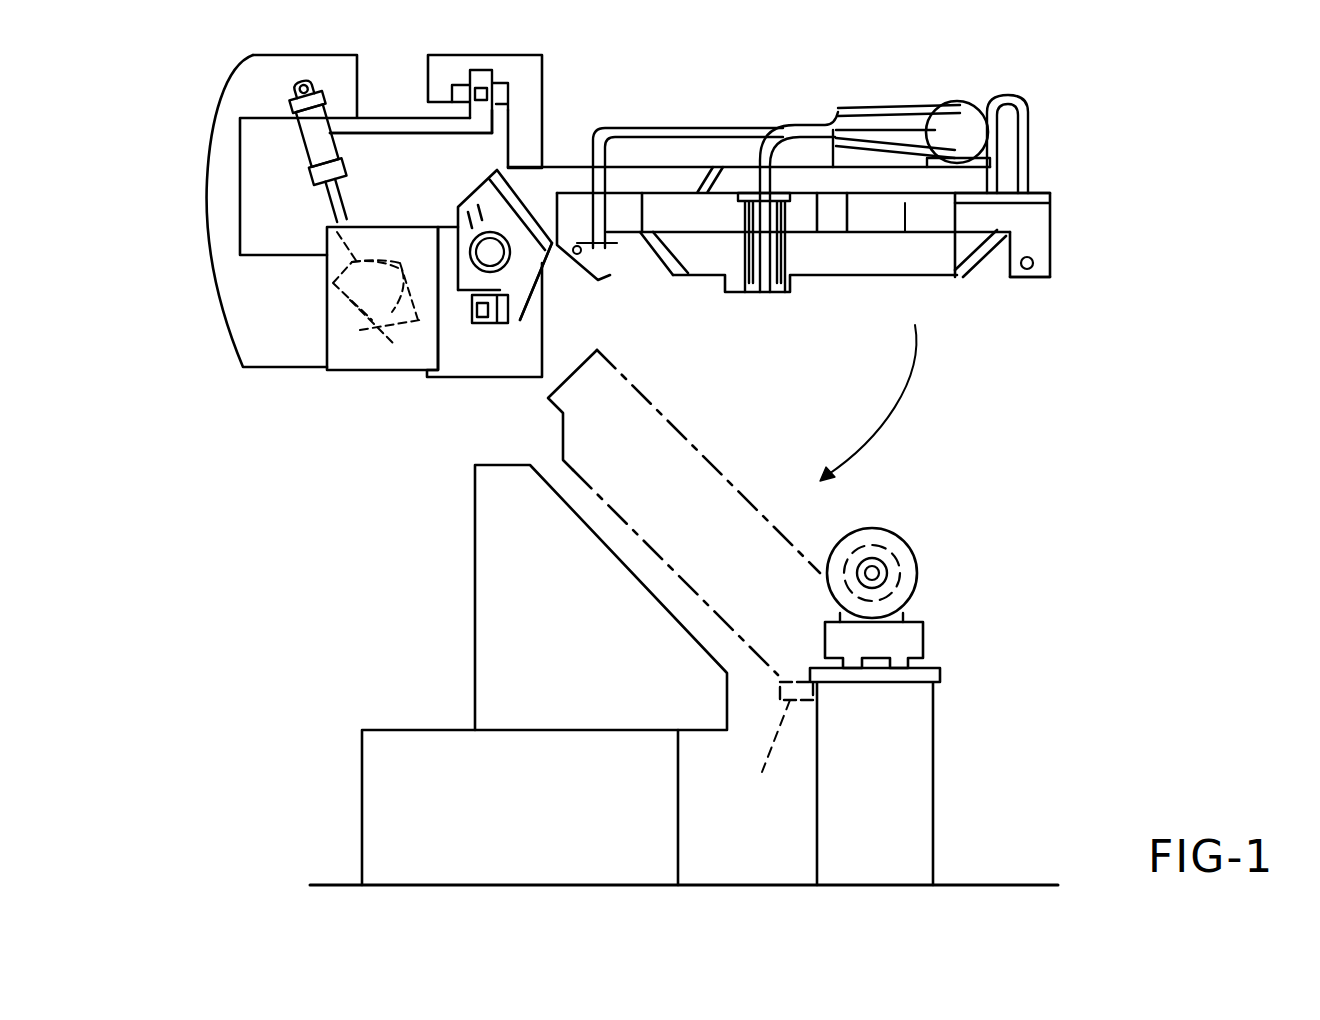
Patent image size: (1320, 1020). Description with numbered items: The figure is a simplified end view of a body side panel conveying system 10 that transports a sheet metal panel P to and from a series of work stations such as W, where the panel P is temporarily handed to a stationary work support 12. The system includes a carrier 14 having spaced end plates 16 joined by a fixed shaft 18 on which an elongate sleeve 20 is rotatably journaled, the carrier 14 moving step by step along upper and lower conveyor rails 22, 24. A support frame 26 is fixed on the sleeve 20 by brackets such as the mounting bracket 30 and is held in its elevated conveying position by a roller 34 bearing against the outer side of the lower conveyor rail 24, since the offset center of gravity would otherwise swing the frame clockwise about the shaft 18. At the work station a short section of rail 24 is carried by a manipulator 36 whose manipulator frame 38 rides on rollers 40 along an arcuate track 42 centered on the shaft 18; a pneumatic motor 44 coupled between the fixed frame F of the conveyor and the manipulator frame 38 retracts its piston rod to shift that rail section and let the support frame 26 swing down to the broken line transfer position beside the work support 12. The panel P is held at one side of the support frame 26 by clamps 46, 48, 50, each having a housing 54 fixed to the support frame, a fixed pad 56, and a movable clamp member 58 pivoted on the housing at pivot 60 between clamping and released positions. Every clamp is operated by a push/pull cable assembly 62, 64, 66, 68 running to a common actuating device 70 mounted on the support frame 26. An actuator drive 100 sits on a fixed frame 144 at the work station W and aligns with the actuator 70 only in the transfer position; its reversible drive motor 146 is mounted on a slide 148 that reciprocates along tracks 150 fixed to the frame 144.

The body side panel conveying system 10 is at (614, 31).
The stationary work support 12 is at (533, 605).
The carrier 14 is at (503, 131).
The end plates 16 is at (540, 93).
The fixed shaft 18 is at (500, 254).
The elongate sleeve 20 is at (485, 230).
The upper conveyor rail 22 is at (452, 92).
The lower conveyor rail 24 is at (467, 318).
The support frame 26 is at (735, 167).
The mounting bracket 30 is at (522, 290).
The roller 34 is at (504, 320).
The manipulator 36 is at (387, 356).
The manipulator frame 38 is at (467, 347).
The rollers 40 is at (345, 296).
The arcuate track 42 is at (390, 272).
The pneumatic motor 44 is at (307, 137).
The clamp 46 is at (628, 275).
The clamp 48 is at (858, 294).
The clamp 50 is at (1038, 278).
The housing or frame 54 is at (1042, 217).
The fixed pad 56 is at (945, 262).
The movable clamp member 58 is at (997, 277).
The pivot 60 is at (1030, 260).
The push/pull cable assembly 62 is at (676, 126).
The push/pull cable assembly 64 is at (800, 122).
The push/pull cable assembly 66 is at (1030, 118).
The push/pull cable assembly 68 is at (865, 110).
The common actuating device 70 is at (978, 96).
The actuator drive 100 is at (1053, 503).
The fixed frame 144 is at (922, 758).
The reversible drive motor 146 is at (887, 528).
The slide 148 is at (825, 633).
The tracks 150 is at (892, 660).
The fixed frame of the conveyor F is at (226, 97).
The work station W is at (432, 592).
The panel P is at (725, 275).